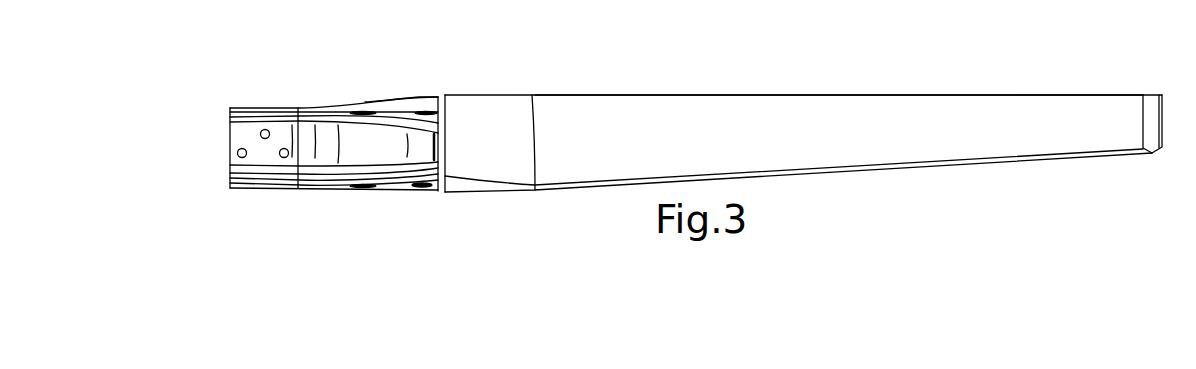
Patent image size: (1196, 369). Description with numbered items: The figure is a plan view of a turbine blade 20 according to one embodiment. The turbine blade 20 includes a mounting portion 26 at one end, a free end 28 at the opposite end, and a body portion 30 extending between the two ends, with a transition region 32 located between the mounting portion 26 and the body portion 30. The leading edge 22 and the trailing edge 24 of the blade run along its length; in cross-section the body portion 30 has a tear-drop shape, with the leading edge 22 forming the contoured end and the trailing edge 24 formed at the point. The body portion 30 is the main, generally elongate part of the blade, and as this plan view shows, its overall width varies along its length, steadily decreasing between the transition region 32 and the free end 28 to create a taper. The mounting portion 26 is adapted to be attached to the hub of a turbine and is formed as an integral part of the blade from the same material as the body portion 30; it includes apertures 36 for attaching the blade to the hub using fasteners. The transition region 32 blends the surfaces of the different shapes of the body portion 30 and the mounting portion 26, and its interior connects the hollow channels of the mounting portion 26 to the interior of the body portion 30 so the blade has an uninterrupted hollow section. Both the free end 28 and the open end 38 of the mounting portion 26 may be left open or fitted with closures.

The turbine blade 20 is at (268, 36).
The leading edge 22 is at (932, 95).
The trailing edge 24 is at (962, 172).
The mounting portion 26 is at (281, 133).
The free end 28 is at (1125, 115).
The body portion 30 is at (775, 118).
The transition region 32 is at (408, 107).
The apertures 36 is at (280, 152).
The open end 38 is at (228, 118).